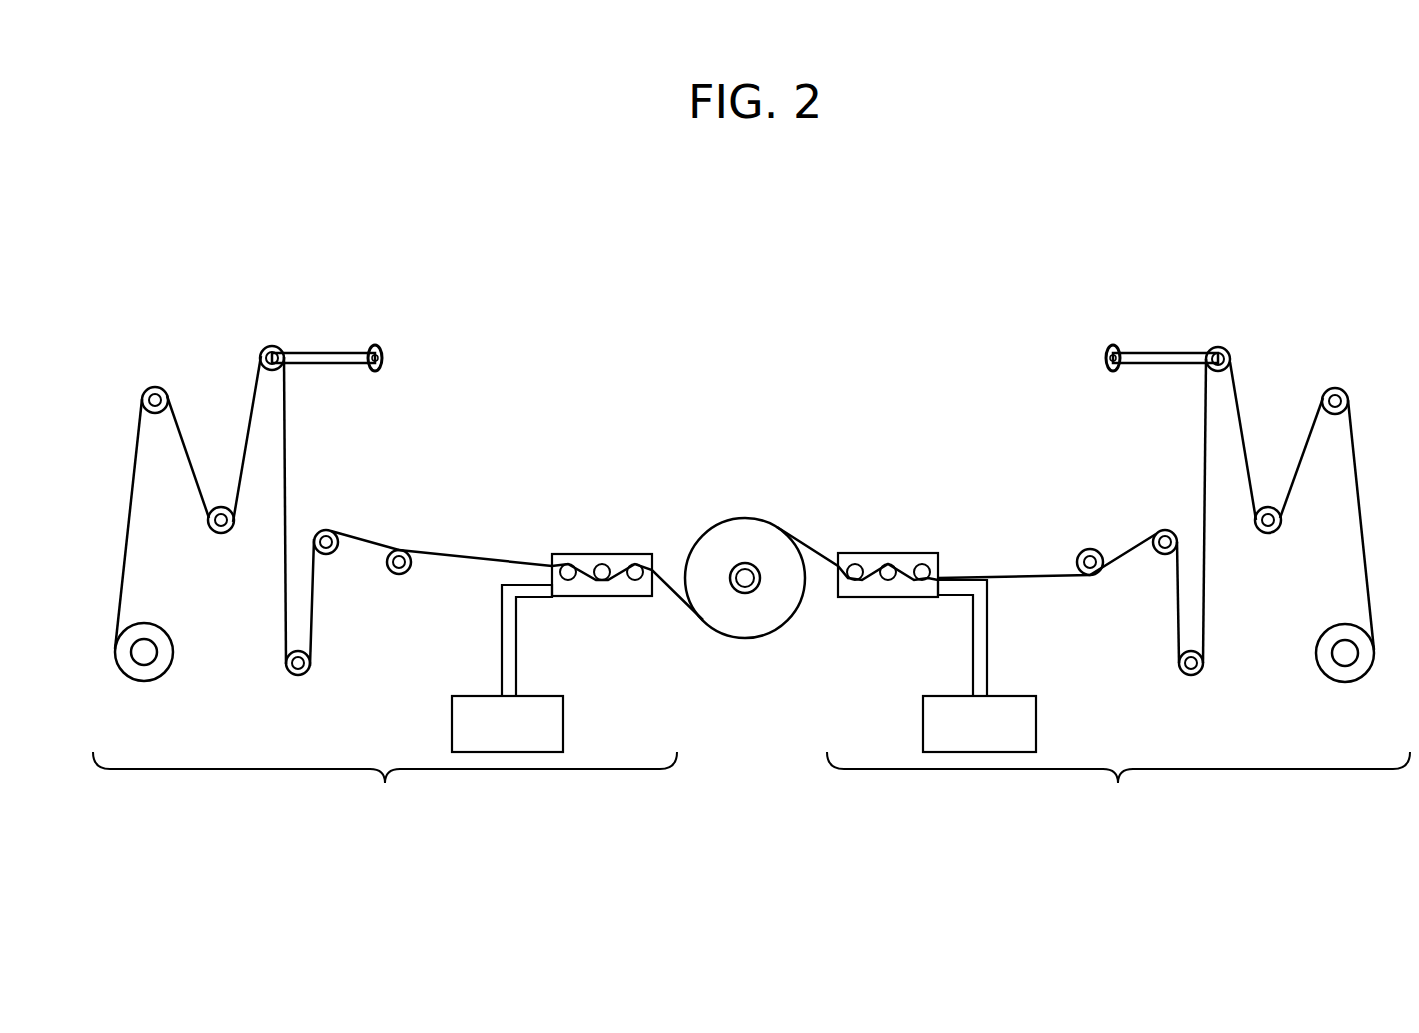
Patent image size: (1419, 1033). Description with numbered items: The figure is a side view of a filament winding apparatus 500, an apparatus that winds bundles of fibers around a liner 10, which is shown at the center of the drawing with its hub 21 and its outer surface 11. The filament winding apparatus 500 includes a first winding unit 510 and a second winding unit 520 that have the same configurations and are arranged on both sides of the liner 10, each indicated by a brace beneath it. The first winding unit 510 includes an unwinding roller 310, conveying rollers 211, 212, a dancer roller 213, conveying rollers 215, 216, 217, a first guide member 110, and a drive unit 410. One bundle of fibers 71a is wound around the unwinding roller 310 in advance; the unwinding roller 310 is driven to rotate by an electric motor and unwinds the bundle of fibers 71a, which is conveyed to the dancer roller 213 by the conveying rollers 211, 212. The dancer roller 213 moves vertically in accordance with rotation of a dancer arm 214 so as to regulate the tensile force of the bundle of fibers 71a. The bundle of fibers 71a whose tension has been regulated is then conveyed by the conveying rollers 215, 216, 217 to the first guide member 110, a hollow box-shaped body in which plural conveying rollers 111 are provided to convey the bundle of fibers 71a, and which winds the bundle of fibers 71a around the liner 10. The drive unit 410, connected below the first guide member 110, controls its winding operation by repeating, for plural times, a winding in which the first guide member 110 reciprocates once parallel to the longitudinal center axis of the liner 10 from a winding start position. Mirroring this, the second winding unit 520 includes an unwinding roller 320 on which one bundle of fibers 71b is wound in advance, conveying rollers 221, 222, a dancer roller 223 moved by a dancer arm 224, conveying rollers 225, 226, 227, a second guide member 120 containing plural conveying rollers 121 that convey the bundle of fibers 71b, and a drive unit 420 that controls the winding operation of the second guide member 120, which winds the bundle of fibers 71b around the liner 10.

The filament winding apparatus 500 is at (211, 210).
The liner 10 is at (745, 500).
The drum peripheral surface 11 is at (775, 605).
The drum shaft 21 is at (735, 590).
The bundle of fibers 71a is at (130, 507).
The bundle of fibers 71b is at (1018, 575).
The first guide member 110 is at (610, 553).
The conveying rollers 111 is at (635, 580).
The second guide member 120 is at (880, 553).
The conveying rollers 121 is at (922, 580).
The conveying roller 211 is at (157, 387).
The conveying roller 212 is at (221, 535).
The dancer roller 213 is at (272, 345).
The dancer arm 214 is at (327, 353).
The conveying roller 215 is at (298, 677).
The conveying roller 216 is at (335, 553).
The conveying roller 217 is at (399, 577).
The conveying roller 221 is at (1333, 387).
The conveying roller 222 is at (1268, 535).
The dancer roller 223 is at (1218, 345).
The dancer arm 224 is at (1164, 353).
The conveying roller 225 is at (1191, 677).
The conveying roller 226 is at (1155, 553).
The conveying roller 227 is at (1092, 578).
The unwinding roller 310 is at (146, 683).
The unwinding roller 320 is at (1343, 684).
The drive unit 410 is at (563, 723).
The drive unit 420 is at (923, 723).
The first winding unit 510 is at (385, 785).
The second winding unit 520 is at (1118, 785).